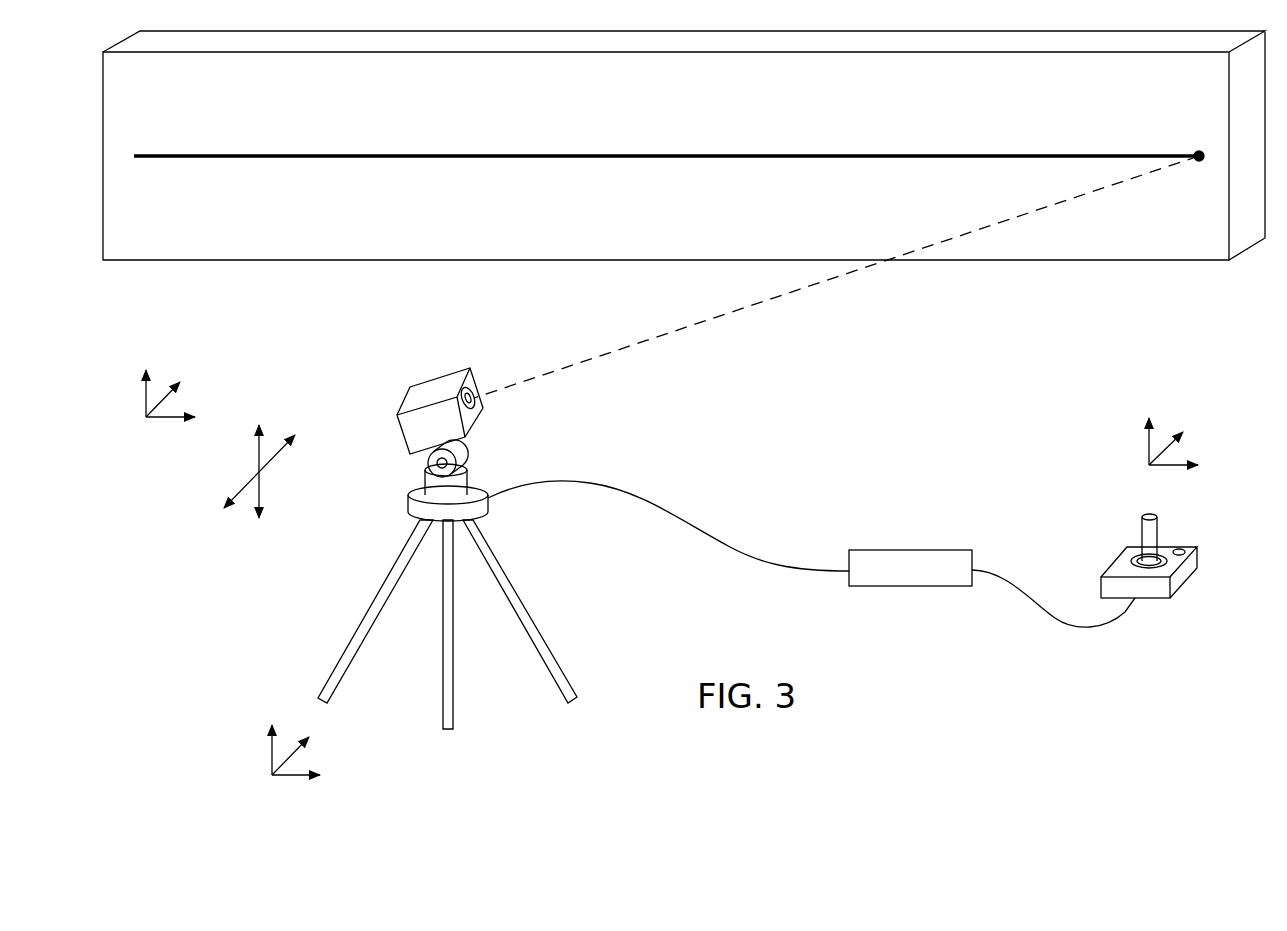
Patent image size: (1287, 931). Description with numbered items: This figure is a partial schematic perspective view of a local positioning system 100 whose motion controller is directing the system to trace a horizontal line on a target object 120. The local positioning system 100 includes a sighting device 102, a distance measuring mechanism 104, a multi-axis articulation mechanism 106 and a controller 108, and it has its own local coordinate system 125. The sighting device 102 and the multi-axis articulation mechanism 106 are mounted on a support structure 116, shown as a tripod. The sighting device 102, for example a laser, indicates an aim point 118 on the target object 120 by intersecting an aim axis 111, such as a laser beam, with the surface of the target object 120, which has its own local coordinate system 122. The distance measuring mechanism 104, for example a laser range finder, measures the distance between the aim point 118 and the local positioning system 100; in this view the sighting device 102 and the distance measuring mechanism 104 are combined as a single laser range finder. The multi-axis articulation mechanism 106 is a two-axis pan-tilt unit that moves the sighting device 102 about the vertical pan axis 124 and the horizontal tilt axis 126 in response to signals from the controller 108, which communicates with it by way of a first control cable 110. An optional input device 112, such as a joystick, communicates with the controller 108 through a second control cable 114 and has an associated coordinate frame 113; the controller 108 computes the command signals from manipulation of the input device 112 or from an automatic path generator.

The local positioning system 100 is at (712, 447).
The sighting device 102 is at (397, 412).
The distance measuring mechanism 104 is at (483, 382).
The multi-axis articulation mechanism 106 is at (411, 468).
The controller 108 is at (908, 550).
The first control cable 110 is at (727, 546).
The aim axis 111 is at (655, 340).
The input device 112 is at (1115, 560).
The joystick coordinate axes 113 is at (1146, 467).
The second control cable 114 is at (1081, 629).
The support structure 116 is at (368, 608).
The aim point 118 is at (1193, 152).
The target object 120 is at (1113, 262).
The local coordinate system 122 is at (146, 420).
The pan axis 124 is at (260, 492).
The local coordinate system 125 is at (272, 778).
The tilt axis 126 is at (243, 487).